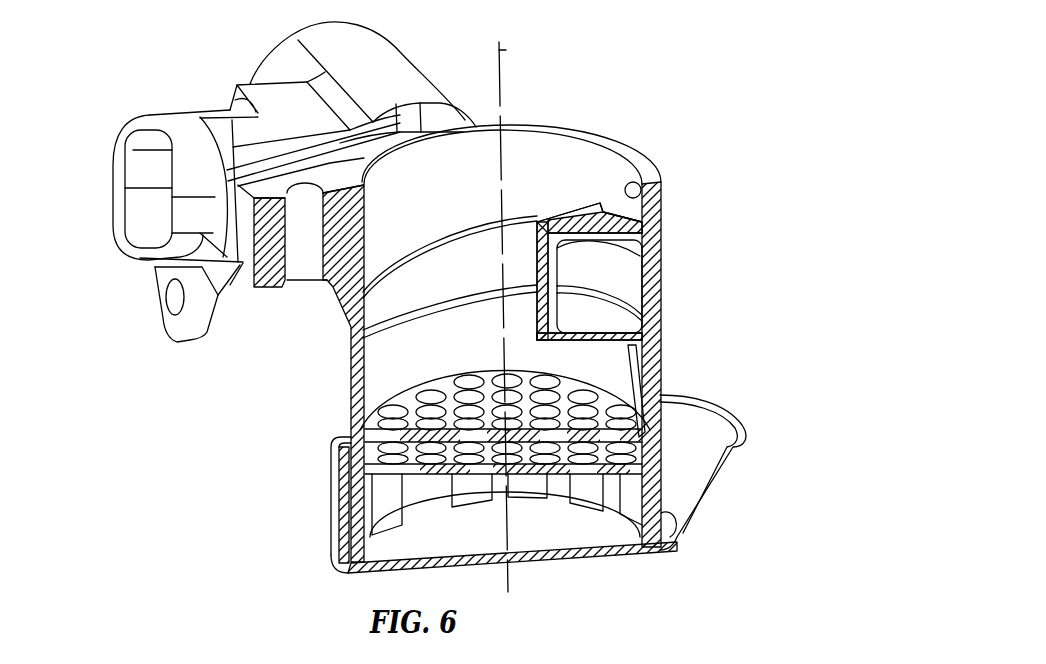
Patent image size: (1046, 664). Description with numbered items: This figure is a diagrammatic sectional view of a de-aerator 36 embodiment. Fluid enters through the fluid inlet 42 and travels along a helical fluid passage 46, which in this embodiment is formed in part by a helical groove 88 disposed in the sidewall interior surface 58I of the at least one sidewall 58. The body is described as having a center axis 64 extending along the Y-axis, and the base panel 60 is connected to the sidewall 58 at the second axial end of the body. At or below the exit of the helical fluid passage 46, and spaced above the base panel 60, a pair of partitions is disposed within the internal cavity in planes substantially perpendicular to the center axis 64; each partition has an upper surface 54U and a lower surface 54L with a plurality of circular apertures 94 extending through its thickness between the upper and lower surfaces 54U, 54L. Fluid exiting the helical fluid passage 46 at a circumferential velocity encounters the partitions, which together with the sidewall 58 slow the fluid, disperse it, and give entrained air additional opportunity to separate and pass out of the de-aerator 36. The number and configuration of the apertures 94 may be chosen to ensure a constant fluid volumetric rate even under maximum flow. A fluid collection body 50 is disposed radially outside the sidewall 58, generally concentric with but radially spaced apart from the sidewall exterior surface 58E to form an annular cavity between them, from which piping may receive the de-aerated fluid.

The de-aerator 36 is at (668, 85).
The fluid inlet 42 is at (135, 178).
The helical fluid passage 46 is at (655, 297).
The fluid collection body 50 is at (500, 510).
The upper surface 54U is at (514, 393).
The lower surface 54L is at (645, 425).
The sidewall 58 is at (661, 258).
The sidewall interior surface 58I is at (641, 188).
The sidewall exterior surface 58E is at (661, 212).
The base panel 60 is at (598, 556).
The center axis 64 is at (506, 50).
The helical groove 88 is at (645, 278).
The apertures 94 is at (393, 402).